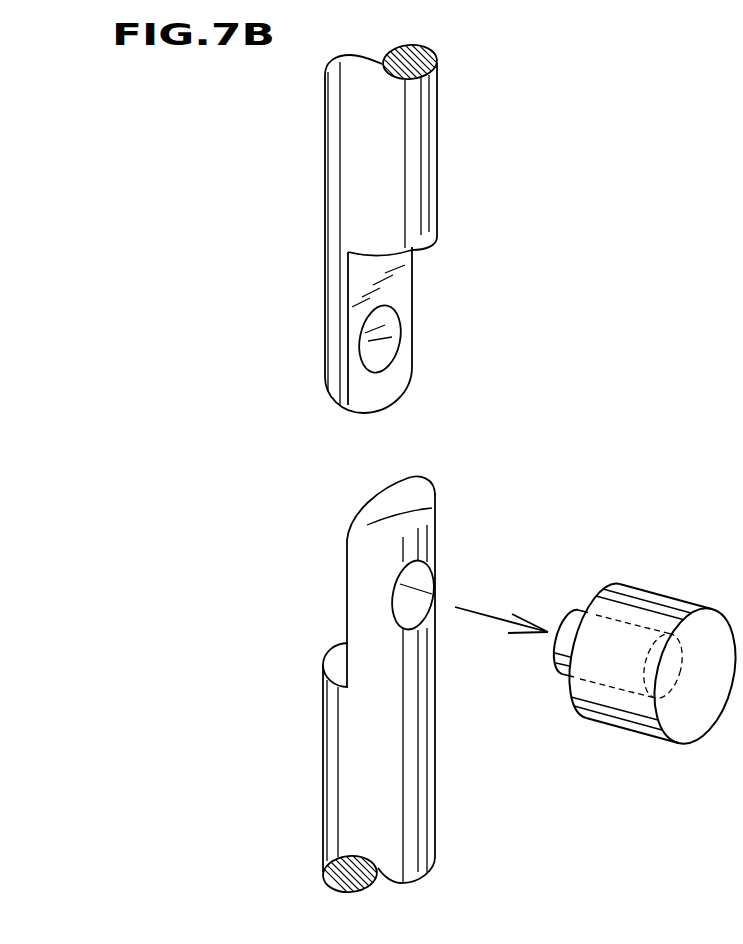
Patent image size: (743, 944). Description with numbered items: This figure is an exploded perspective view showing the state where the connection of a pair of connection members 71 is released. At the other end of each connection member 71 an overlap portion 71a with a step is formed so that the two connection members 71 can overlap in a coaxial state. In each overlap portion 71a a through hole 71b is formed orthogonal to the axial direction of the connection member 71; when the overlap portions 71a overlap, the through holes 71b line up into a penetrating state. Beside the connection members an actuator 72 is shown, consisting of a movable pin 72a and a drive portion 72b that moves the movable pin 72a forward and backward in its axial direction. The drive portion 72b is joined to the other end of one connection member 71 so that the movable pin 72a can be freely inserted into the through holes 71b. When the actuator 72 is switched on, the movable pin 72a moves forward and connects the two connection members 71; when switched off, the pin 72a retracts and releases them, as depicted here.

The connection member 71 is at (425, 142).
The overlap portion 71a is at (402, 368).
The through hole 71b is at (388, 322).
The actuator 72 is at (648, 611).
The movable pin 72a is at (588, 598).
The drive portion 72b is at (666, 604).